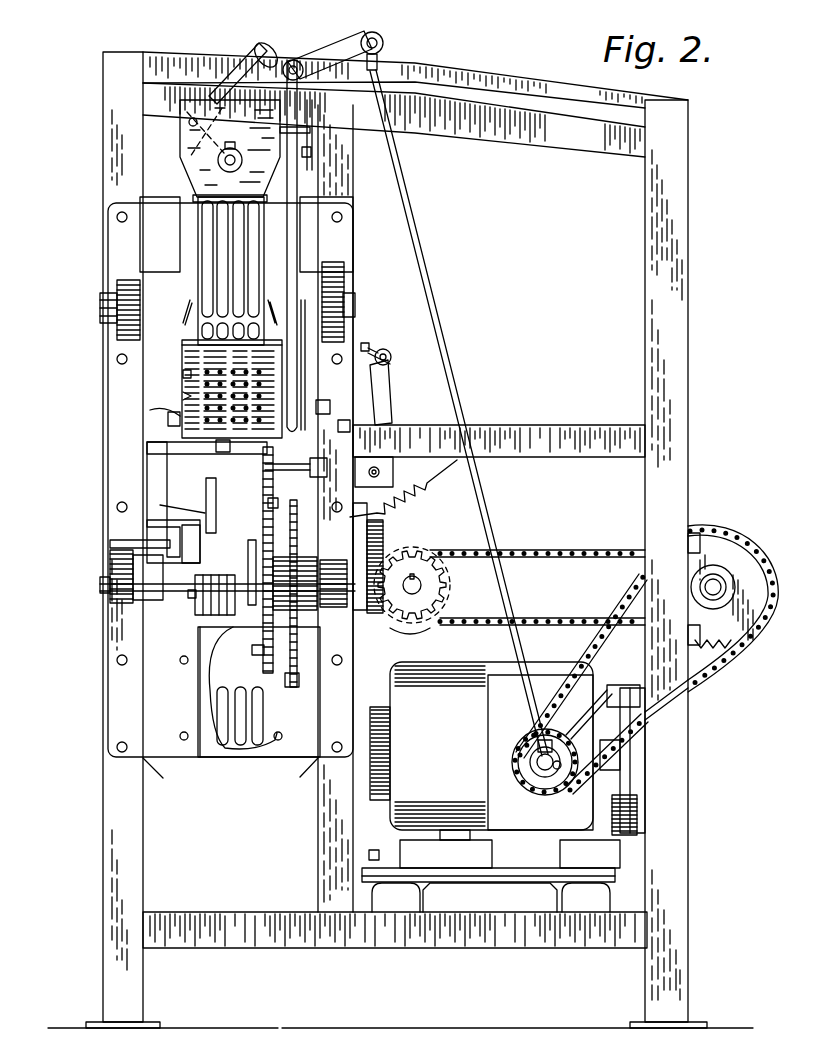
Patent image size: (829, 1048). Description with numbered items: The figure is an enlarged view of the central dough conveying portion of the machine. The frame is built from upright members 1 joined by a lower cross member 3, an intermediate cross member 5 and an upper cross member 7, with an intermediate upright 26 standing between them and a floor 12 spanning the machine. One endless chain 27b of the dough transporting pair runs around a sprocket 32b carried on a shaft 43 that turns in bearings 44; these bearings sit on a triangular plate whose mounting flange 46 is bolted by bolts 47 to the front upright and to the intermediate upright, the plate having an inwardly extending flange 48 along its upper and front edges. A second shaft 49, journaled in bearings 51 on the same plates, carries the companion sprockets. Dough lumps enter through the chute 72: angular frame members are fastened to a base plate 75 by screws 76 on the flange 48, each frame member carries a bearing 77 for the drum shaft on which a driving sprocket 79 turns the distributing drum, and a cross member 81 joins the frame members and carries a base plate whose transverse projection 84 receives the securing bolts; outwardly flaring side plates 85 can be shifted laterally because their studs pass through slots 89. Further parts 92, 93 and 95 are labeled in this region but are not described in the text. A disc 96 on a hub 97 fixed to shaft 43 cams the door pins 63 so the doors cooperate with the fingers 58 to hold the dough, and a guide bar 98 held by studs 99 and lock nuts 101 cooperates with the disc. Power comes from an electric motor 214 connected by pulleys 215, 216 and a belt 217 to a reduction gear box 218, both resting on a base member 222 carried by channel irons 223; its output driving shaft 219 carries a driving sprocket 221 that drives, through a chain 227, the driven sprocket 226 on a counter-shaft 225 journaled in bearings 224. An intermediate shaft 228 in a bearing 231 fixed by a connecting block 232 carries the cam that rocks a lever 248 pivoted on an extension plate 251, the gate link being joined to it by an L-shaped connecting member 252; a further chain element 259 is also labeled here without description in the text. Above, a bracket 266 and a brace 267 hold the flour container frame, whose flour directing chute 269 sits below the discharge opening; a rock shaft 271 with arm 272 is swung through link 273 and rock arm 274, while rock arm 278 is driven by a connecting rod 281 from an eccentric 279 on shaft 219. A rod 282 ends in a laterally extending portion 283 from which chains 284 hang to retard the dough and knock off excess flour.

The upright member 1 is at (108, 853).
The lower cross member 3 is at (509, 940).
The intermediate cross member 5 is at (520, 432).
The upper cross member 7 is at (520, 85).
The floor 12 is at (525, 125).
The intermediate upright 26 is at (323, 838).
The endless chain 27b is at (289, 698).
The sprocket 32b is at (290, 655).
The shaft 43 is at (100, 584).
The bearing 44 is at (118, 590).
The mounting flange 46 is at (115, 386).
The bolt 47 is at (117, 218).
The inwardly extending flange 48 is at (163, 200).
The shaft 49 is at (102, 303).
The bearing 51 is at (119, 292).
The finger 58 is at (207, 630).
The pin 63 is at (263, 647).
The chute 72 is at (150, 412).
The base plate 75 is at (160, 594).
The screw 76 is at (145, 594).
The bearing 77 is at (167, 535).
The driving sprocket 79 is at (153, 475).
The cross member 81 is at (232, 453).
The transverse projection 84 is at (223, 446).
The side plate 85 is at (198, 312).
The slot 89 is at (203, 380).
The link 92 is at (160, 505).
The connecting rod 93 is at (211, 505).
The bracket 95 is at (322, 407).
The disc 96 is at (344, 427).
The hub 97 is at (253, 568).
The guide bar 98 is at (263, 476).
The stud 99 is at (306, 466).
The lock nut 101 is at (343, 460).
The electric motor 214 is at (469, 674).
The pulley 215 is at (643, 707).
The pulley 216 is at (630, 831).
The belt 217 is at (622, 788).
The reduction gear box 218 is at (580, 854).
The output driving shaft 219 is at (544, 770).
The driving sprocket 221 is at (536, 775).
The base member 222 is at (458, 884).
The channel iron 223 is at (393, 885).
The bearing 224 is at (693, 566).
The counter-shaft 225 is at (716, 585).
The driven sprocket 226 is at (750, 573).
The chain 227 is at (700, 671).
The intermediate shaft 228 is at (421, 583).
The bearing 231 is at (441, 616).
The connecting block 232 is at (421, 633).
The lever 248 is at (386, 381).
The extension plate 251 is at (386, 470).
The L-shaped connecting member 252 is at (389, 351).
The chain 259 is at (428, 552).
The bracket 266 is at (312, 134).
The brace 267 is at (302, 368).
The flour directing chute 269 is at (185, 147).
The rock shaft 271 is at (236, 152).
The arm 272 is at (216, 140).
The link 273 is at (247, 62).
The rock arm 274 is at (286, 54).
The rock arm 278 is at (366, 36).
The eccentric 279 is at (569, 727).
The connecting rod 281 is at (442, 320).
The rod 282 is at (293, 235).
The laterally extending portion 283 is at (183, 375).
The chain 284 is at (183, 397).